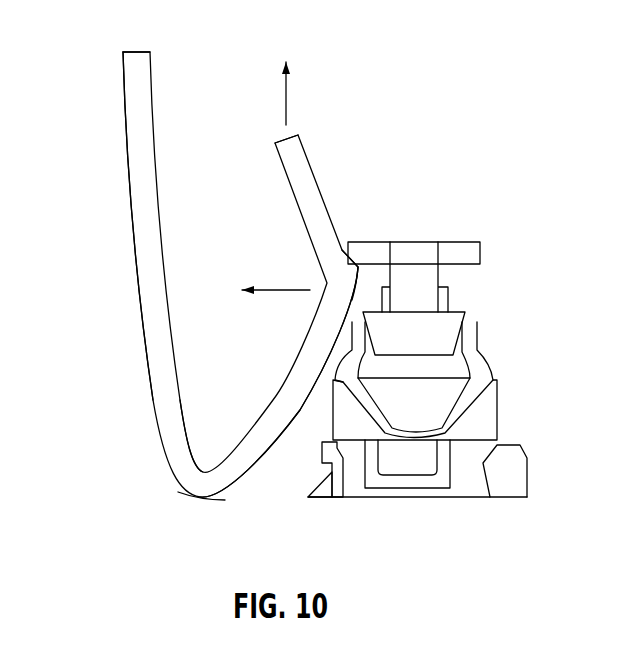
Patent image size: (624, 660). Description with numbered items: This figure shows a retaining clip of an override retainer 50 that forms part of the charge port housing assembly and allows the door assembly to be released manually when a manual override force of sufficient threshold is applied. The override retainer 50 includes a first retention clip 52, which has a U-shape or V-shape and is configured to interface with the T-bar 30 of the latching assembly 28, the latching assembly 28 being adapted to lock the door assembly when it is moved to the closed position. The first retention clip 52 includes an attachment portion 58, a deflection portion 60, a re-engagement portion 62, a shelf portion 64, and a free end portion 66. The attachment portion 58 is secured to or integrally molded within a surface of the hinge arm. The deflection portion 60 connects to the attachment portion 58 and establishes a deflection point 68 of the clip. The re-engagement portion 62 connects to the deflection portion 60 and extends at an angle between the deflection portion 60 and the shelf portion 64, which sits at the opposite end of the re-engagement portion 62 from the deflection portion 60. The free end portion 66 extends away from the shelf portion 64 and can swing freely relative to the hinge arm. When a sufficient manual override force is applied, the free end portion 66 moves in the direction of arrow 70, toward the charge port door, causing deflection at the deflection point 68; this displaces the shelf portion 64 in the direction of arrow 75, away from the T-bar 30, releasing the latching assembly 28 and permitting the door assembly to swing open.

The latching assembly 28 is at (474, 405).
The T-bar 30 is at (467, 254).
The override retainer 50 is at (197, 504).
The first retention clip 52 is at (134, 252).
The attachment portion 58 is at (124, 50).
The deflection portion 60 is at (188, 470).
The re-engagement portion 62 is at (299, 440).
The shelf portion 64 is at (361, 265).
The free end portion 66 is at (277, 138).
The deflection point 68 is at (201, 498).
The arrow 70 is at (288, 112).
The arrow 75 is at (273, 295).